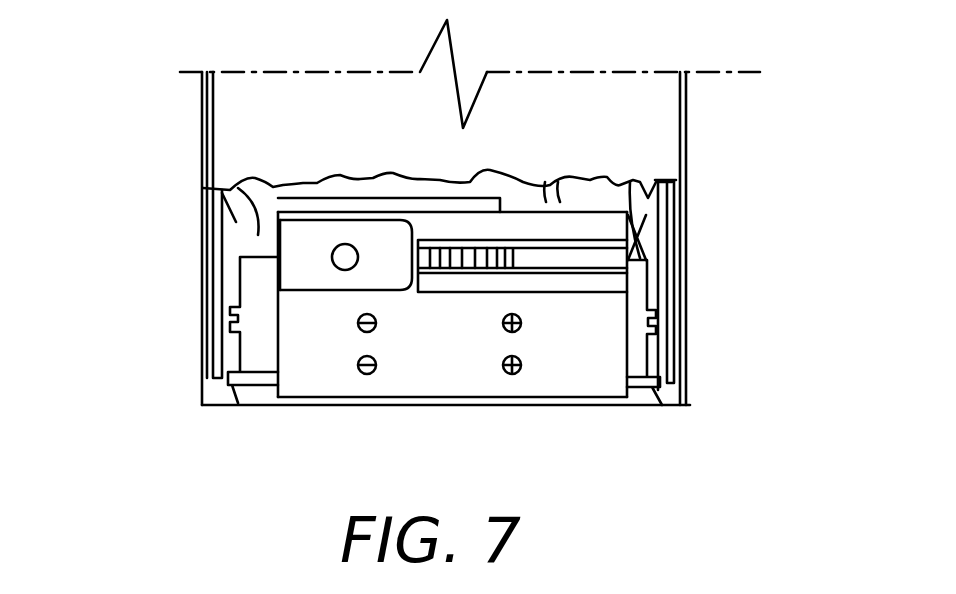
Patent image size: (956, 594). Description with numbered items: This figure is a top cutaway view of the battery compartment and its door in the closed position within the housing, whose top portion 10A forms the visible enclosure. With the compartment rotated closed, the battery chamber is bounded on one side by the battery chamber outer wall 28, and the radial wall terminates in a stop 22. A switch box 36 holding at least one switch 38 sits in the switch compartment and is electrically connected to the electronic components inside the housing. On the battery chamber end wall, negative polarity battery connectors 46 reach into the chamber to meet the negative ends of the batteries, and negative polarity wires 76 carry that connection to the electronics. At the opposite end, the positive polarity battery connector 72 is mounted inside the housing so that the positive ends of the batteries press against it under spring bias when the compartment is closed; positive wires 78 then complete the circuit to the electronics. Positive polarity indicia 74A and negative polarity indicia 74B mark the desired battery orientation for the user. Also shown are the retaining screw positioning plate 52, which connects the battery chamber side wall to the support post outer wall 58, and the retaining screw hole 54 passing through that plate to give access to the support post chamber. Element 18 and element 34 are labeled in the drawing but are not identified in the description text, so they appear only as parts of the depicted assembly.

The top portion 10A is at (663, 163).
The bottom wall 18 is at (347, 405).
The stop 22 is at (317, 202).
The battery chamber outer wall 28 is at (582, 387).
The board layer 34 is at (587, 223).
The switch box 36 is at (503, 260).
The switch 38 is at (432, 268).
The negative polarity battery connector 46 is at (280, 337).
The retaining screw positioning plate 52 is at (292, 270).
The retaining screw hole 54 is at (333, 251).
The support post outer wall 58 is at (382, 215).
The positive polarity battery connector 72 is at (637, 303).
The positive polarity indicia 74A is at (516, 331).
The negative polarity indicia 74B is at (370, 332).
The negative polarity wires 76 is at (262, 245).
The positive wires 78 is at (633, 228).